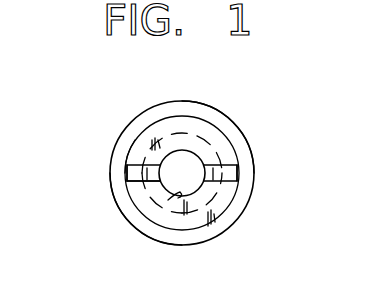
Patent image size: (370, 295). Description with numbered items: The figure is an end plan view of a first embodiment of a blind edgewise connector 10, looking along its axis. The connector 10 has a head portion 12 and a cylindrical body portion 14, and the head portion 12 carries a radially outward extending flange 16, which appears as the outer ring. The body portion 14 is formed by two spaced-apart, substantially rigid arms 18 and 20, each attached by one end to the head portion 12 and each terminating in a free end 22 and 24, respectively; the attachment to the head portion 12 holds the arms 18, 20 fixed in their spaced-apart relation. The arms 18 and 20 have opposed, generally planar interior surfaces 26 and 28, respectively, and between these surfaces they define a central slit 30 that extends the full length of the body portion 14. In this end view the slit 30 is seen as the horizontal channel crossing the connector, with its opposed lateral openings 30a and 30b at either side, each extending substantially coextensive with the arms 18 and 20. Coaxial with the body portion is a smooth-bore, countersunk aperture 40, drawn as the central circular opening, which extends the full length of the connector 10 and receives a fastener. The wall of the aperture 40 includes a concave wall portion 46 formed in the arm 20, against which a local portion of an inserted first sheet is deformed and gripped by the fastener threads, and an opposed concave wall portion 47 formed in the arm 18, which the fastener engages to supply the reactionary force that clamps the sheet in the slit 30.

The edgewise connector 10 is at (110, 123).
The head portion 12 is at (242, 128).
The cylindrical body portion 14 is at (187, 232).
The flange 16 is at (242, 147).
The arm 18 is at (237, 163).
The arm 20 is at (234, 196).
The free end 22 is at (177, 128).
The free end 24 is at (213, 222).
The interior surface 26 is at (127, 177).
The interior surface 28 is at (120, 192).
The central slit 30 is at (234, 173).
The lateral opening 30a is at (126, 176).
The lateral opening 30b is at (236, 180).
The countersunk aperture 40 is at (187, 152).
The concave wall portion 46 is at (168, 200).
The concave wall portion 47 is at (160, 140).